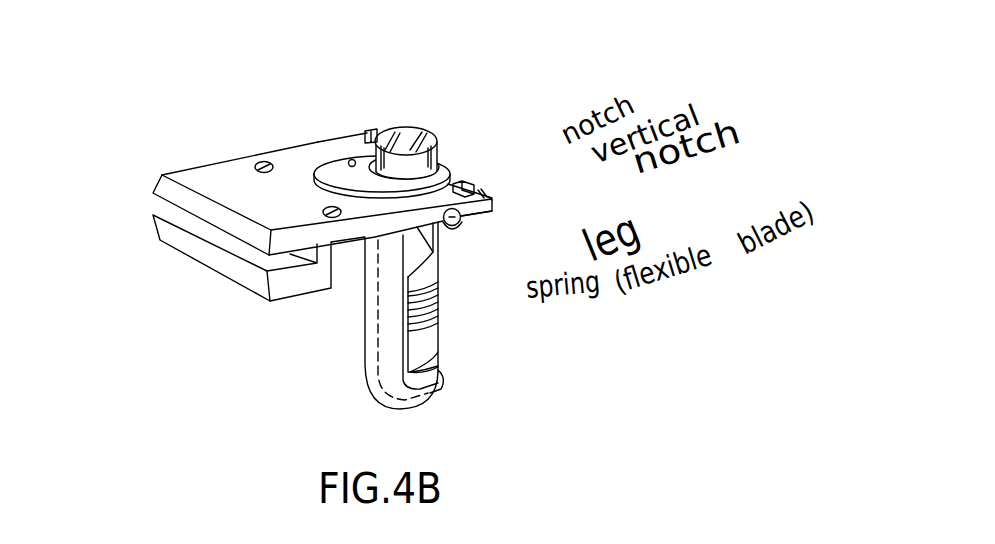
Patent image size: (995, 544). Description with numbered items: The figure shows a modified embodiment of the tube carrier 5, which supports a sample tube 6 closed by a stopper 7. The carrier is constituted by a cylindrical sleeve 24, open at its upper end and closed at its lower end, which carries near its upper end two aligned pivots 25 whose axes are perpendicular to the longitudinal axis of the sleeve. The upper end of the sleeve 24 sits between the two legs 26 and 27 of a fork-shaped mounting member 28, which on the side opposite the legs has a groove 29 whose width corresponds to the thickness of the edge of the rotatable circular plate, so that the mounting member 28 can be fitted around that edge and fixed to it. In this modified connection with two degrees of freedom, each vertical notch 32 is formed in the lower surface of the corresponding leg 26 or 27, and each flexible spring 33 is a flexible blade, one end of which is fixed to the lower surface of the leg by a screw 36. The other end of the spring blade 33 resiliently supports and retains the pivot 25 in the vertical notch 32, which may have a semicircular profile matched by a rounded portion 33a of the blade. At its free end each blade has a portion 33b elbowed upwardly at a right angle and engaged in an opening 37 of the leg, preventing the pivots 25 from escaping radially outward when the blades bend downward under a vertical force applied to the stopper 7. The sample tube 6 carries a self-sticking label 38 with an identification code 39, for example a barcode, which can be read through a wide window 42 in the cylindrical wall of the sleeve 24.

The tube carrier 5 is at (350, 252).
The sample tube 6 is at (427, 372).
The stopper 7 is at (415, 132).
The cylindrical sleeve 24 is at (373, 368).
The pivot 25 is at (352, 160).
The leg 26 is at (334, 146).
The leg 27 is at (492, 204).
The mounting member 28 is at (195, 158).
The groove 29 is at (226, 238).
The vertical notch 32 is at (492, 196).
The flexible spring 33 is at (336, 170).
The rounded portion 33a is at (453, 232).
The elbowed portion 33b is at (373, 130).
The screw 36 is at (262, 163).
The opening 37 is at (482, 193).
The self-sticking label 38 is at (427, 344).
The identification code 39 is at (437, 307).
The window 42 is at (434, 385).